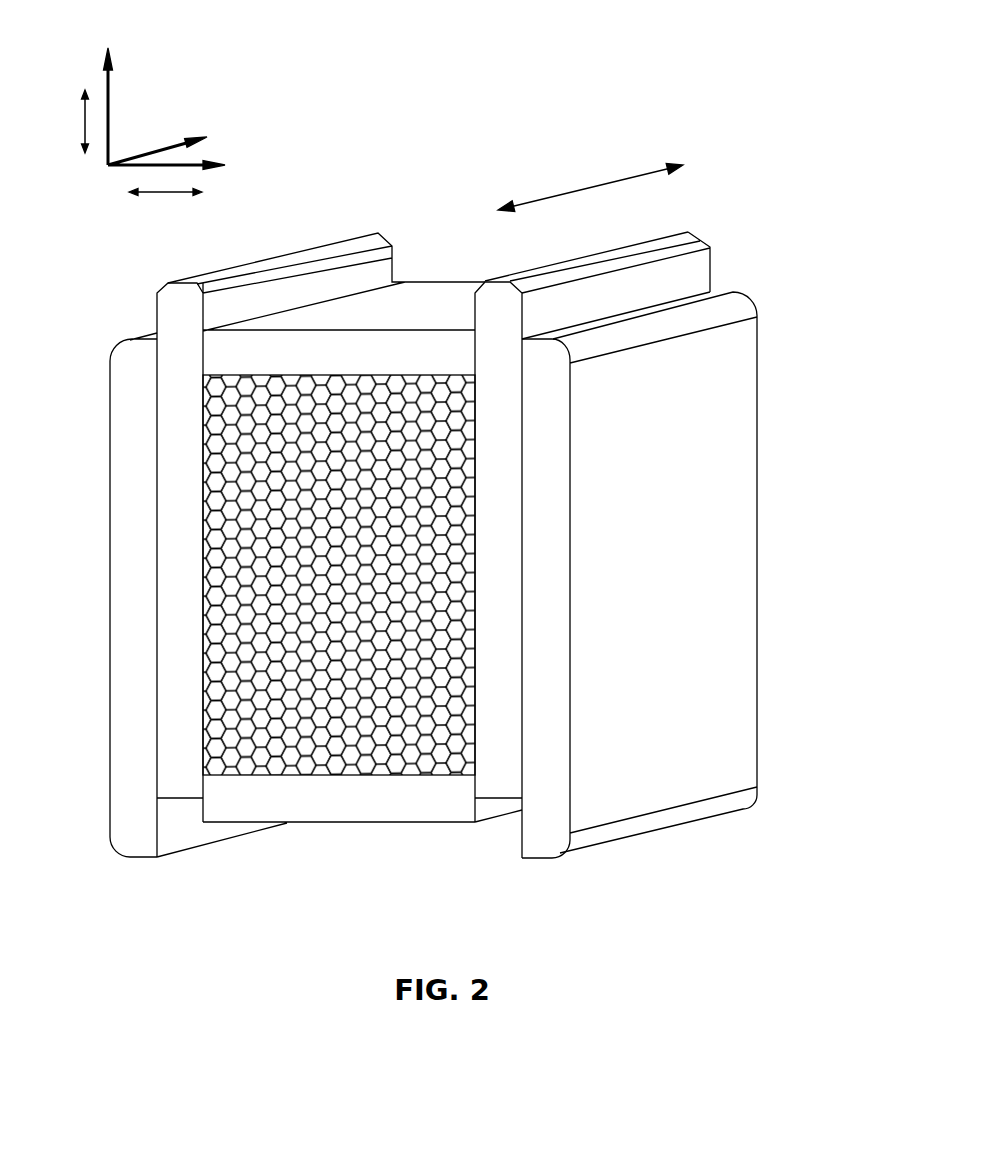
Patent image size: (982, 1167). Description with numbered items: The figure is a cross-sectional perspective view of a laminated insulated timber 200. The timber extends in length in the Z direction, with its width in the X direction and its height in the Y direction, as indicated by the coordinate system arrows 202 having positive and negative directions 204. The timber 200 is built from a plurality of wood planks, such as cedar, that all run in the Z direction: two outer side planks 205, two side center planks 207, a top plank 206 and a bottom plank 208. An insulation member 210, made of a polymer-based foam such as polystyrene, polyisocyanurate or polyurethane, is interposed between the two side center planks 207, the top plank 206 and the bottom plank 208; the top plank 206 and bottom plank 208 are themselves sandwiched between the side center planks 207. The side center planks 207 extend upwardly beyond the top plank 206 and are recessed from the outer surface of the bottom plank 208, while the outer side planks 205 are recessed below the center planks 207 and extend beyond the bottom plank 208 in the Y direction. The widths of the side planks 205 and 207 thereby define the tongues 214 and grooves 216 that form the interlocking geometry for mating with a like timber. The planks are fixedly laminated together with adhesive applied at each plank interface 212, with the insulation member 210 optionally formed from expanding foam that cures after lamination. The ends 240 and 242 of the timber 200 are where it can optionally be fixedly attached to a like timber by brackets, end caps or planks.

The laminated insulated timber 200 is at (511, 69).
The coordinate system arrows 202 is at (265, 128).
The positive and negative directions 204 is at (167, 233).
The outer side planks 205 is at (130, 428).
The top plank 206 is at (448, 298).
The side center planks 207 is at (173, 533).
The bottom plank 208 is at (430, 823).
The insulation member 210 is at (287, 767).
The plank interface 212 is at (523, 675).
The tongues 214 is at (687, 222).
The grooves 216 is at (112, 627).
The end 240 is at (497, 335).
The end 242 is at (758, 360).